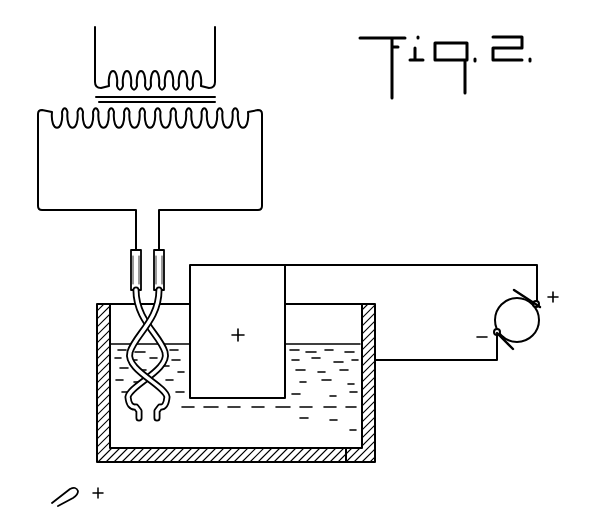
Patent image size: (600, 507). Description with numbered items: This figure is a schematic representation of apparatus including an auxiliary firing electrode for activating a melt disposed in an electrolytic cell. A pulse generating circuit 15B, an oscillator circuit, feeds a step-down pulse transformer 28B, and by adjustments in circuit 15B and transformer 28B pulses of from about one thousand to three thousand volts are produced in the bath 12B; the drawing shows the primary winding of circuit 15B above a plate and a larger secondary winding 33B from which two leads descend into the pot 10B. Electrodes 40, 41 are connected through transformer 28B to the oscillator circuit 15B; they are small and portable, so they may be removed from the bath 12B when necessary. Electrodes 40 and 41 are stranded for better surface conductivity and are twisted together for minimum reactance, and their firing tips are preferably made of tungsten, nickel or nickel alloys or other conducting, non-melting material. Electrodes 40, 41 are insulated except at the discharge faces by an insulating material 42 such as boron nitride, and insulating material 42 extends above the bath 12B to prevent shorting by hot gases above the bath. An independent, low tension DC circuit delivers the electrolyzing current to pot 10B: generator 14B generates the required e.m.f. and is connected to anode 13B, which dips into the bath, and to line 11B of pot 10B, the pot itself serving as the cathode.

The pot 10B is at (243, 466).
The line 11B is at (346, 462).
The bath 12B is at (372, 420).
The anode 13B is at (273, 275).
The generator 14B is at (534, 330).
The pulse generating circuit 15B is at (215, 62).
The step-down pulse transformer 28B is at (96, 97).
The secondary winding 33B is at (252, 110).
The electrode 40 is at (142, 367).
The electrode 41 is at (153, 367).
The insulating material 42 is at (125, 390).